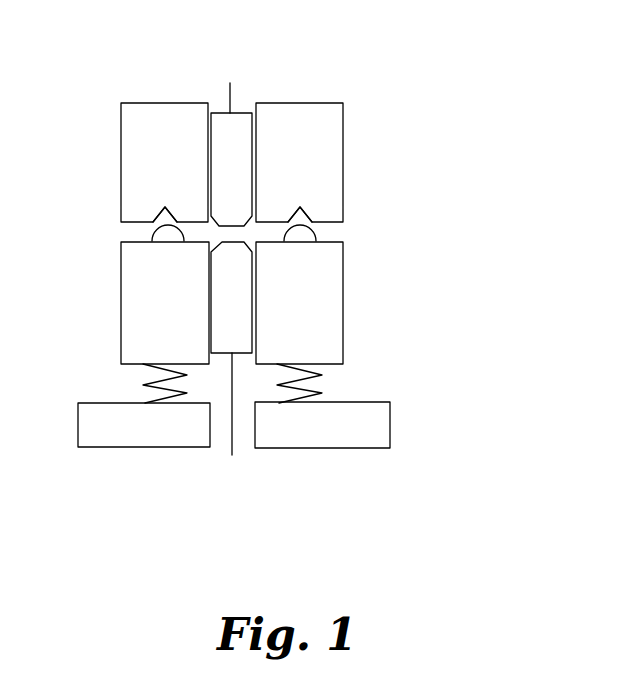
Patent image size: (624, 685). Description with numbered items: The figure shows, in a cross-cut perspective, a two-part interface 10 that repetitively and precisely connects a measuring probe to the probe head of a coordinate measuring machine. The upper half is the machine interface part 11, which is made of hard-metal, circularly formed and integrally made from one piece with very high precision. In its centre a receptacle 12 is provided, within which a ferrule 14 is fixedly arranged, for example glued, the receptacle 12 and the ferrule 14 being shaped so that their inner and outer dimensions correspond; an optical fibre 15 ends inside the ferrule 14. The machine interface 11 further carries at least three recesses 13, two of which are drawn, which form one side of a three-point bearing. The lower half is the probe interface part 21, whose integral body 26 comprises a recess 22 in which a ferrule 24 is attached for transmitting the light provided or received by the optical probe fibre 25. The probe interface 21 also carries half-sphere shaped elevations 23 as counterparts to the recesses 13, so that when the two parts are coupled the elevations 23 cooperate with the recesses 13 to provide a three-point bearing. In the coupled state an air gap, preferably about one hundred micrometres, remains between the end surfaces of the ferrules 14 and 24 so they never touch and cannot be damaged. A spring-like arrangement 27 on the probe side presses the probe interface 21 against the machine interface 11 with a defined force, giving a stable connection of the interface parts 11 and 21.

The two-part interface 10 is at (287, 279).
The machine interface part 11 is at (240, 118).
The receptacle 12 is at (232, 129).
The recesses 13 is at (240, 182).
The ferrule 14 is at (259, 142).
The optical fibre 15 is at (266, 61).
The probe interface part 21 is at (259, 386).
The recess 22 is at (191, 428).
The half-sphere shaped elevations 23 is at (238, 261).
The ferrule 24 is at (261, 367).
The optical probe fibre 25 is at (266, 450).
The integral body 26 is at (194, 303).
The spring-like arrangement 27 is at (207, 400).